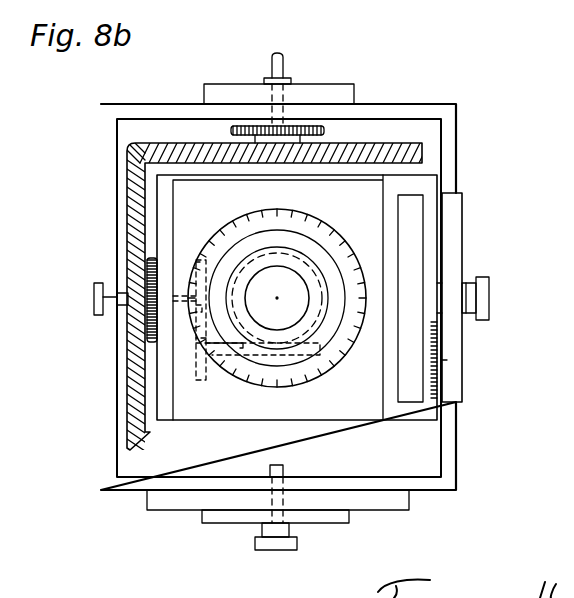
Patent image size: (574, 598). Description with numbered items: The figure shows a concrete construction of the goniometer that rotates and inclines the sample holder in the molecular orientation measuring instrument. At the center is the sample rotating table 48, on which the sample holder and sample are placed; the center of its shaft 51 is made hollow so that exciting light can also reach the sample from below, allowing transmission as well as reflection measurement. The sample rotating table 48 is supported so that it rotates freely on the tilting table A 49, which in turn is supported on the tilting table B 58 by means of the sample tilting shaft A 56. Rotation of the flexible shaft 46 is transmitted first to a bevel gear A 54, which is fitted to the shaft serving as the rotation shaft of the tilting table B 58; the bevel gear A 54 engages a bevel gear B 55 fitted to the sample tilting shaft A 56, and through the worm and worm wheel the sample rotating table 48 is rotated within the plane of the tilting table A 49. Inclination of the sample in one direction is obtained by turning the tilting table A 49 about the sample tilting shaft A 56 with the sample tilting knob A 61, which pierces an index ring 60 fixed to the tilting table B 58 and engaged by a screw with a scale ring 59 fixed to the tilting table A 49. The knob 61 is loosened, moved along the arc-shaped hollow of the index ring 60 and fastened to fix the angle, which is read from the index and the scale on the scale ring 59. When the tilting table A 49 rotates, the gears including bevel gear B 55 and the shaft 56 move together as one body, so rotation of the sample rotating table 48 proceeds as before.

The flexible shaft 46 is at (280, 66).
The bevel gear A 54 is at (263, 261).
The bevel gear B 55 is at (128, 390).
The sample tilting shaft A 56 is at (94, 292).
The tilting table A 49 is at (202, 415).
The sample rotating table 48 is at (290, 360).
The shaft of the sample rotating table 51 is at (295, 305).
The scale ring 59 is at (428, 201).
The index ring 60 is at (457, 240).
The sample tilting knob A 61 is at (489, 298).
The tilting table B 58 is at (446, 477).